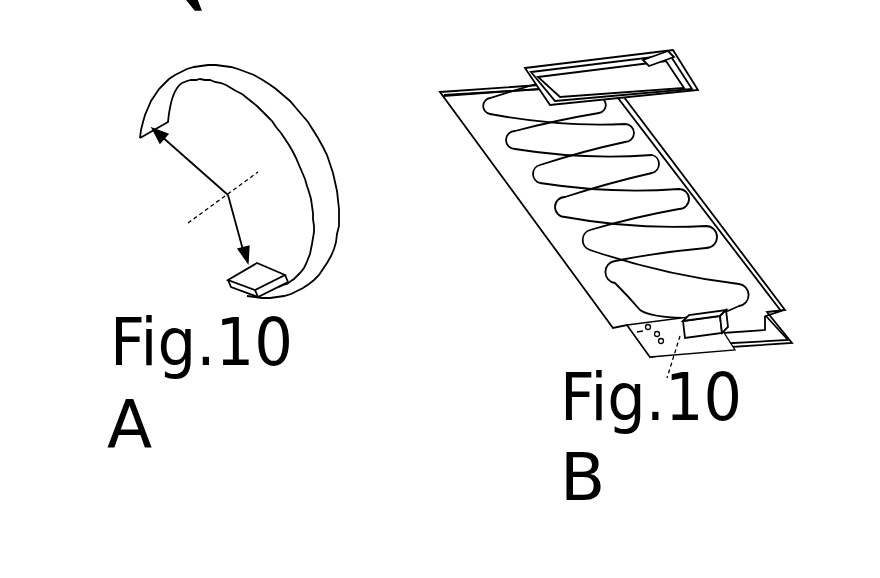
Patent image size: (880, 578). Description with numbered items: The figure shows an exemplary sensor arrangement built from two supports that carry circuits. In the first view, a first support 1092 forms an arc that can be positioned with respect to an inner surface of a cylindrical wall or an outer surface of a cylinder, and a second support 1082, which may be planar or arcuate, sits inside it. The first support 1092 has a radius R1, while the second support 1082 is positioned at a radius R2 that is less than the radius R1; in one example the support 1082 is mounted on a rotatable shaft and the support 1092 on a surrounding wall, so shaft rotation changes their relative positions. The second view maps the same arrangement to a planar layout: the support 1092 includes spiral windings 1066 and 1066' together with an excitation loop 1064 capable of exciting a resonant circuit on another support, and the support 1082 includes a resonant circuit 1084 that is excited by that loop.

In FIG. 10A, the first support 1092 is at (145, 118).
In FIG. 10B, the first support 1092 is at (440, 92).
In FIG. 10A, the second support 1082 is at (247, 275).
In FIG. 10B, the second support 1082 is at (525, 68).
In FIG. 10B, the resonant circuit 1084 is at (642, 62).
In FIG. 10B, the spiral winding 1066 is at (639, 206).
In FIG. 10B, the spiral winding 1066' is at (634, 201).
In FIG. 10B, the excitation loop 1064 is at (537, 223).
In FIG. 10A, the radius R1 is at (190, 161).
In FIG. 10A, the radius R2 is at (252, 229).